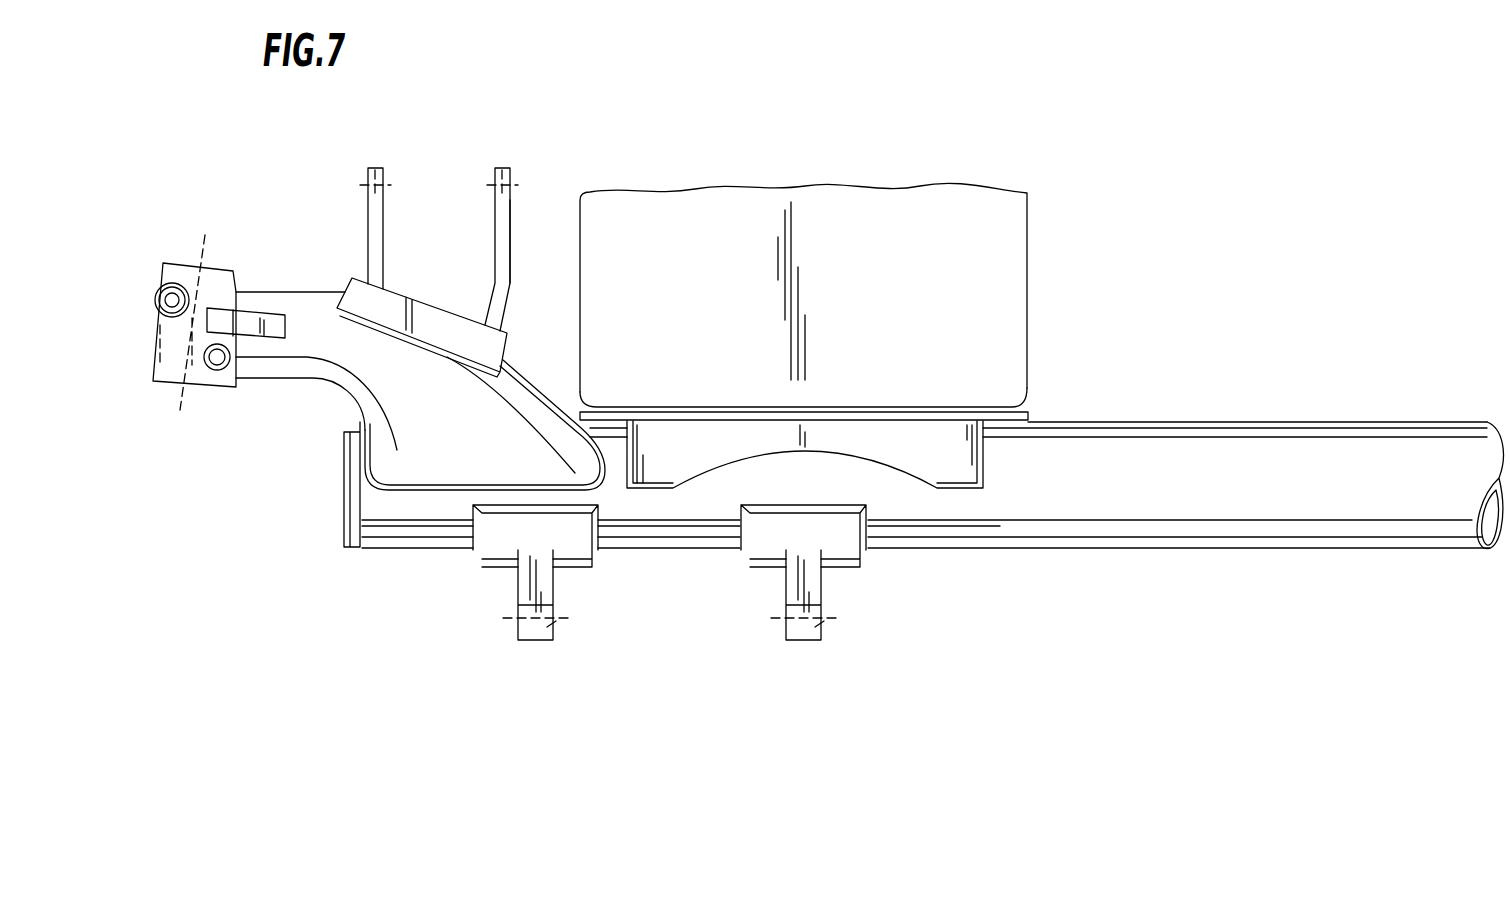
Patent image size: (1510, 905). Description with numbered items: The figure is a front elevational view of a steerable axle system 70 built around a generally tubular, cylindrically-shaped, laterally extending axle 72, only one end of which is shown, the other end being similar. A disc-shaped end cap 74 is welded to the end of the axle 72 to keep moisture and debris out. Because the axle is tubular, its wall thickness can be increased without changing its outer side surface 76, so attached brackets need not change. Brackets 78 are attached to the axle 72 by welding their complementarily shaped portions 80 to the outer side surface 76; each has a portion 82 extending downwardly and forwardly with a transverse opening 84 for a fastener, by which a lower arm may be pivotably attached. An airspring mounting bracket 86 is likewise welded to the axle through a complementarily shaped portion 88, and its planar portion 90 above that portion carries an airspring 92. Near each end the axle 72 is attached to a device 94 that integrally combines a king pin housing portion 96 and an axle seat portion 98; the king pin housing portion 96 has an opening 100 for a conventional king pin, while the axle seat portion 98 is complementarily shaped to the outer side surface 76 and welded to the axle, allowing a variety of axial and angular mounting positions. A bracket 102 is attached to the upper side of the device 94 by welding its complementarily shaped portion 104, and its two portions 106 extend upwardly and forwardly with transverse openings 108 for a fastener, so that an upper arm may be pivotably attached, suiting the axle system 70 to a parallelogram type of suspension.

The axle system 70 is at (1216, 162).
The axle 72 is at (1288, 560).
The end cap 74 is at (344, 494).
The outer side surface 76 is at (1248, 422).
The bracket 78 is at (543, 652).
The complementarily shaped portion 80 is at (593, 570).
The portion 82 is at (518, 588).
The opening 84 is at (562, 624).
The airspring mounting bracket 86 is at (1038, 416).
The complementarily shaped portion 88 is at (983, 464).
The planar portion 90 is at (982, 405).
The airspring 92 is at (1028, 280).
The device 94 is at (312, 392).
The king pin housing portion 96 is at (277, 292).
The axle seat portion 98 is at (557, 402).
The opening 100 is at (212, 264).
The bracket 102 is at (524, 218).
The complementarily shaped portion 104 is at (408, 293).
The portions 106 is at (367, 217).
The openings 108 is at (388, 185).